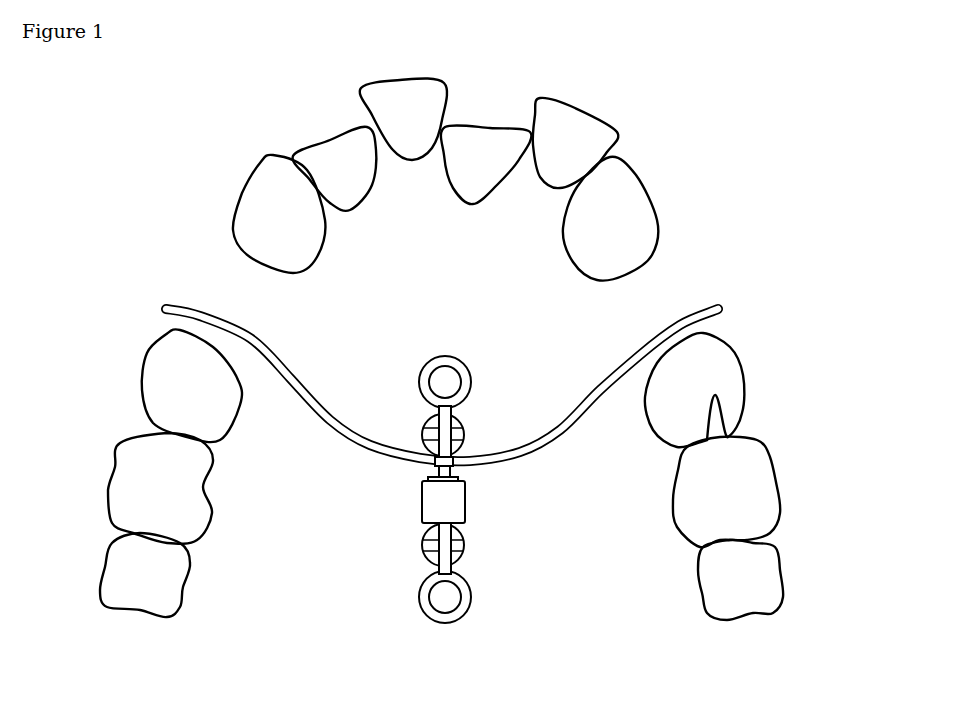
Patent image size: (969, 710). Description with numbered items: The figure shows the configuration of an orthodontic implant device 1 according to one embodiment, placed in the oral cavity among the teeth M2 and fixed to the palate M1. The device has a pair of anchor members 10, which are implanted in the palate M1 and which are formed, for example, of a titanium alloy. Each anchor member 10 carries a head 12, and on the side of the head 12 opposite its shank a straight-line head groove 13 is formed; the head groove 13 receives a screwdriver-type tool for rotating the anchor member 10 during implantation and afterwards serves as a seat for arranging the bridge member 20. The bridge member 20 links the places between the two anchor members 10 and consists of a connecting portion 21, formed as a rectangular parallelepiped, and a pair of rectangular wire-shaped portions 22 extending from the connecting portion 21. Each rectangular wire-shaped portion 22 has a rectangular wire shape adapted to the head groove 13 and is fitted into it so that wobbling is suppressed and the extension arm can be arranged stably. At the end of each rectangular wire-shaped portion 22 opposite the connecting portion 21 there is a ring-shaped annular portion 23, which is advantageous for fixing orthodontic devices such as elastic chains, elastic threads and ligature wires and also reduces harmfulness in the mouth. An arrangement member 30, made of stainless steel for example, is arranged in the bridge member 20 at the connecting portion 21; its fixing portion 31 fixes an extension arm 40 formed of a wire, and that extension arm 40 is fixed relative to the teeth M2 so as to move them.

The orthodontic implant device 1 is at (506, 313).
The anchor member 10 is at (432, 478).
The head 12 is at (466, 430).
The head groove 13 is at (428, 440).
The bridge member 20 is at (437, 461).
The connecting portion 21 is at (430, 497).
The rectangular wire-shaped portion 22 is at (458, 412).
The annular portion 23 is at (470, 374).
The arrangement member 30 is at (448, 474).
The fixing portion 31 is at (458, 456).
The extension arm 40 is at (676, 300).
The palate M1 is at (365, 272).
The teeth M2 is at (392, 113).